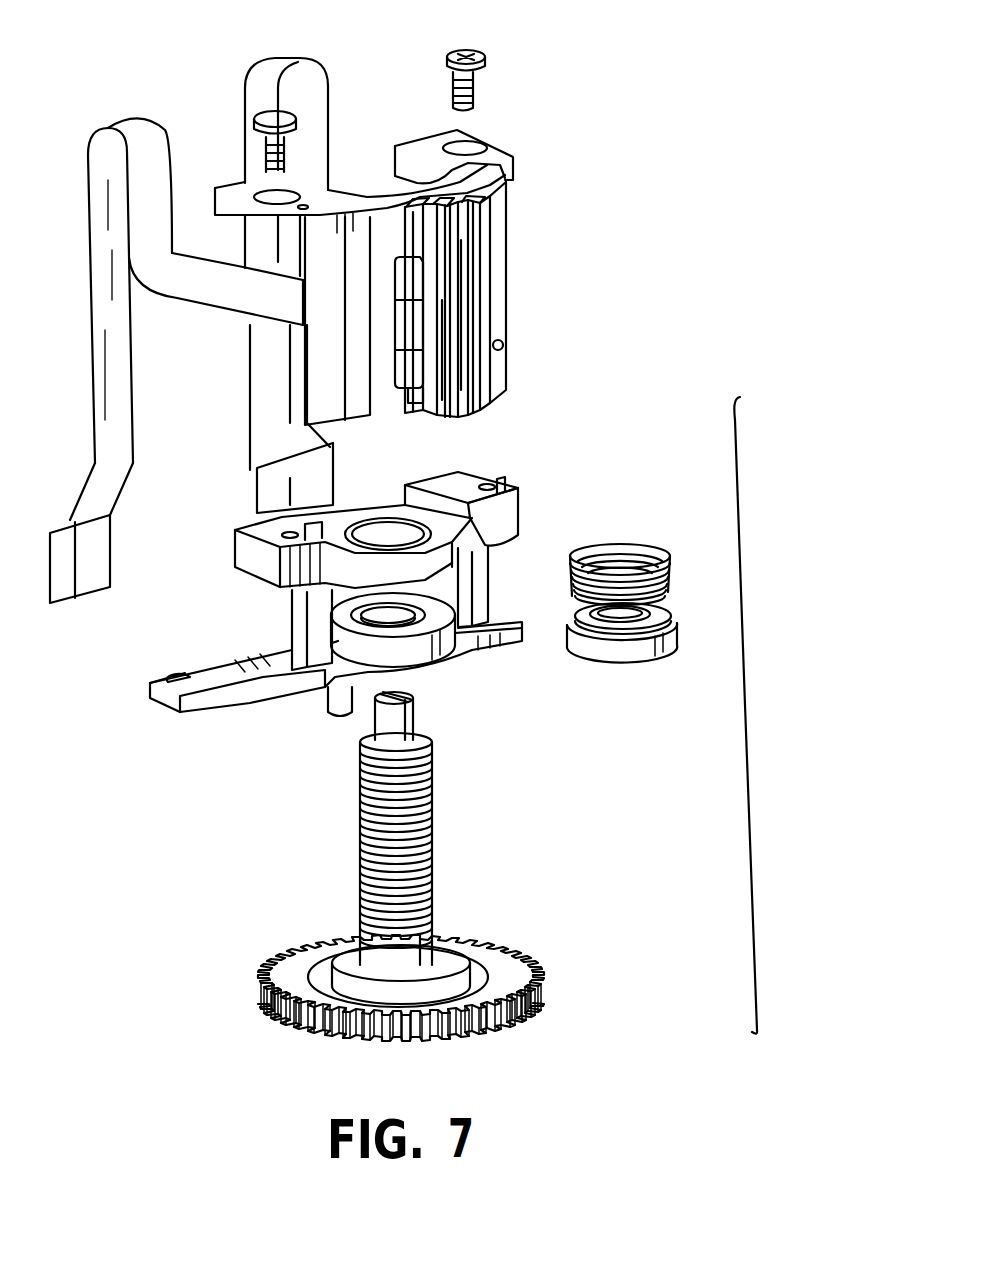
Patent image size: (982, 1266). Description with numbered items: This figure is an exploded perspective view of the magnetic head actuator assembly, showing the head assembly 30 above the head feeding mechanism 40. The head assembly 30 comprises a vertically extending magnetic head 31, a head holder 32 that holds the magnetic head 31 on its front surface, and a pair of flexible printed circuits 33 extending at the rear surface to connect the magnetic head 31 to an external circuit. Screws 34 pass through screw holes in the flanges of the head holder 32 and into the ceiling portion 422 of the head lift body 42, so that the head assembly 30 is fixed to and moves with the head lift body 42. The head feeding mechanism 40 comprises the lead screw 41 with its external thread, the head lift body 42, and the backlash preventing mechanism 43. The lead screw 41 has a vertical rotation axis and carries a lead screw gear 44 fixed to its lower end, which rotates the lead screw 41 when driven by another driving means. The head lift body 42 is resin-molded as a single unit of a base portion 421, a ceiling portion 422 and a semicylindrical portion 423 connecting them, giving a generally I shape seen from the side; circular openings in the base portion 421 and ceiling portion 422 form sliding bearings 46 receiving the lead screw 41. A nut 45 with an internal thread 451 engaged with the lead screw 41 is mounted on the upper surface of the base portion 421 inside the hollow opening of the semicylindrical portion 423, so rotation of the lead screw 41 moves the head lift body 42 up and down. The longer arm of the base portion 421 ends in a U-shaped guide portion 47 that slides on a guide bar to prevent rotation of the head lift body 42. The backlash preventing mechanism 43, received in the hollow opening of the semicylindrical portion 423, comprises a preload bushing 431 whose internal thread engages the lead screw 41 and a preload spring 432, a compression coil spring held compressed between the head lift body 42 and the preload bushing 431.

The head assembly 30 is at (556, 200).
The magnetic head 31 is at (507, 235).
The head holder 32 is at (507, 298).
The flexible printed circuits 33 is at (326, 88).
The screw 34 is at (484, 60).
The head feeding mechanism 40 is at (747, 709).
The lead screw 41 is at (433, 828).
The head lift body 42 is at (486, 461).
The base portion 421 is at (447, 668).
The ceiling portion 422 is at (260, 552).
The semicylindrical portion 423 is at (310, 610).
The backlash preventing mechanism 43 is at (613, 680).
The preload bushing 431 is at (683, 628).
The preload spring 432 is at (675, 573).
The lead screw gear 44 is at (518, 952).
The nut 45 is at (358, 640).
The internal thread 451 is at (410, 612).
The sliding bearing 46 is at (383, 528).
The guide portion 47 is at (170, 700).